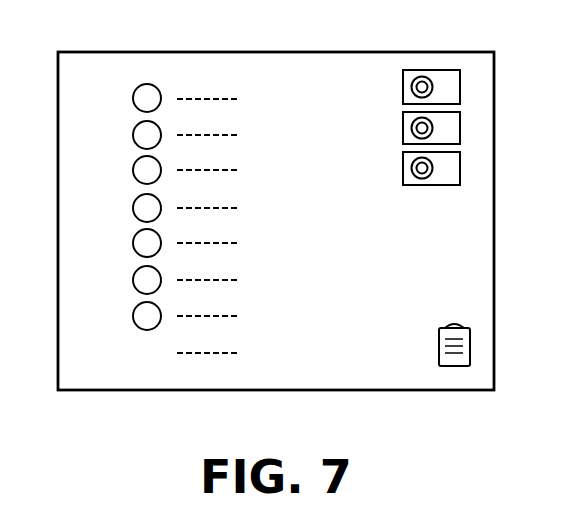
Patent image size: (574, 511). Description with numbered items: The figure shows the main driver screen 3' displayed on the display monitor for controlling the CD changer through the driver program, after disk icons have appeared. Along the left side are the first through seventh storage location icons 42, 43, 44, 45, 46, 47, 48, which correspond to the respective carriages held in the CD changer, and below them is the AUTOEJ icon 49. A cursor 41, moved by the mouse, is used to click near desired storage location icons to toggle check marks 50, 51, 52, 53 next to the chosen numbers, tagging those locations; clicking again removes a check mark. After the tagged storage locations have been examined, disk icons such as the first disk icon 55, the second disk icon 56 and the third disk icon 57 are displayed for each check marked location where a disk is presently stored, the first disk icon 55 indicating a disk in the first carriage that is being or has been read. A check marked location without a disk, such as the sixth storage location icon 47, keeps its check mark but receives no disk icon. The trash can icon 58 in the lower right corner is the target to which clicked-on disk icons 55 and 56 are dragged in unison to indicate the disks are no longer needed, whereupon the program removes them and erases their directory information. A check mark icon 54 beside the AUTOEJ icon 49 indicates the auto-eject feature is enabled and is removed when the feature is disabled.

The main driver screen 3' is at (285, 210).
The cursor 41 is at (321, 91).
The first storage location icon 42 is at (136, 90).
The second storage location icon 43 is at (133, 134).
The third storage location icon 44 is at (133, 169).
The fourth storage location icon 45 is at (133, 207).
The fifth storage location icon 46 is at (133, 242).
The sixth storage location icon 47 is at (133, 279).
The seventh storage location icon 48 is at (133, 315).
The AUTOEJ icon 49 is at (85, 352).
The check mark 50 is at (242, 101).
The check mark 51 is at (242, 173).
The check mark 52 is at (243, 245).
The check mark 53 is at (243, 279).
The check mark icon 54 is at (243, 355).
The first disk icon 55 is at (461, 93).
The second disk icon 56 is at (461, 130).
The third disk icon 57 is at (461, 165).
The trash can icon 58 is at (471, 345).